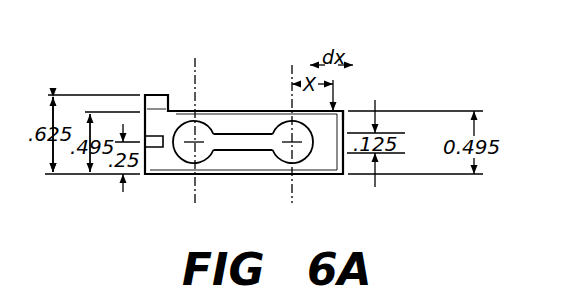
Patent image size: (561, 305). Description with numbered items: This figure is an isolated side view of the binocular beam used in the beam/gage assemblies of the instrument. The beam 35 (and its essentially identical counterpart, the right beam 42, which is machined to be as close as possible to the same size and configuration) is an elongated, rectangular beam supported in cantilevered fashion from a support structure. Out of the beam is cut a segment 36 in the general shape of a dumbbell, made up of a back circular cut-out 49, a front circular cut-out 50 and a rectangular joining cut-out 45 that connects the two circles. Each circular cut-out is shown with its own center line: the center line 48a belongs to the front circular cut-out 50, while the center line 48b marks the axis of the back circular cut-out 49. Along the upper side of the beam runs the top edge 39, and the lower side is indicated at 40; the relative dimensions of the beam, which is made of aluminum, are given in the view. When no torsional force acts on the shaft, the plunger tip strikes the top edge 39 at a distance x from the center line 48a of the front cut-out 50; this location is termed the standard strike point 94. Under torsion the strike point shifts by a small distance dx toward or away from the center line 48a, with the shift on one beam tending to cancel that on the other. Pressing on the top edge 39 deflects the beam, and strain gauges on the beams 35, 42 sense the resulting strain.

The beam 35 is at (283, 156).
The right beam 42 is at (344, 180).
The segment 36 is at (243, 154).
The top edge 39 is at (262, 112).
The bottom surface 40 is at (268, 172).
The rectangular joining cut-out 45 is at (232, 140).
The center line of front circular cut-out 48a is at (292, 66).
The centerline of left hole 48b is at (195, 58).
The back circular cut-out 49 is at (190, 157).
The front circular cut-out 50 is at (300, 154).
The standard strike point 94 is at (340, 112).